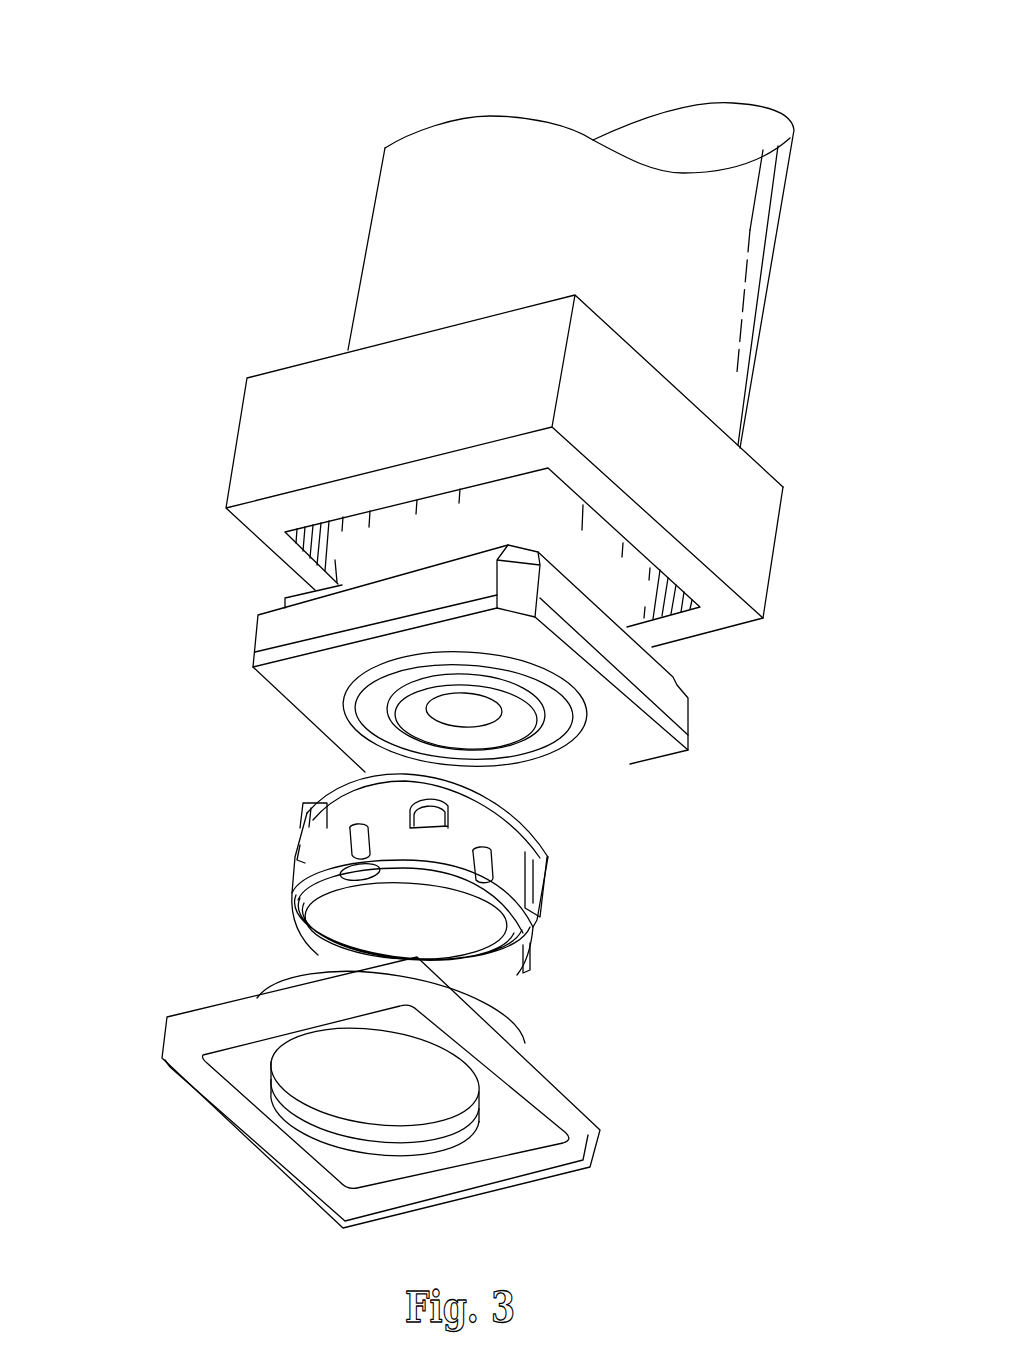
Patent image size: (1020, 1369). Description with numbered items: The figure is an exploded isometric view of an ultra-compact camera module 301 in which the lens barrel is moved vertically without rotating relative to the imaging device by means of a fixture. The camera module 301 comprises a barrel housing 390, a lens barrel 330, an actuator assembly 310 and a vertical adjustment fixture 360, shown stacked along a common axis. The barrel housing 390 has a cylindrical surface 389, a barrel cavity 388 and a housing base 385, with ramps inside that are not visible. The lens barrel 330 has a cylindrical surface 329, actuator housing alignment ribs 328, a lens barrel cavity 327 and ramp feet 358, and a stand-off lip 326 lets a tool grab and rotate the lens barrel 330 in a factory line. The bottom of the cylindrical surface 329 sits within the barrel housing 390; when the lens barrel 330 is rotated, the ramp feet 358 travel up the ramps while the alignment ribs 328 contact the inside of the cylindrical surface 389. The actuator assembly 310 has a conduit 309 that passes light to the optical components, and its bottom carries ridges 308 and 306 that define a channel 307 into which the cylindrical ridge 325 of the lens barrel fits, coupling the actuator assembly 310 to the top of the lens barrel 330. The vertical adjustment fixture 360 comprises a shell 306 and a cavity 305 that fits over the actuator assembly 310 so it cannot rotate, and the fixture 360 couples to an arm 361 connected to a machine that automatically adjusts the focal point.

The ultra-compact camera module 301 is at (135, 75).
The cavity 305 is at (489, 525).
The shell 306 is at (773, 537).
The channel 307 is at (562, 725).
The ridge 308 is at (590, 717).
The conduit 309 is at (465, 710).
The actuator assembly 310 is at (227, 618).
The cylindrical ridge 325 is at (337, 790).
The stand-off lip 326 is at (468, 840).
The lens barrel cavity 327 is at (394, 934).
The actuator housing alignment ribs 328 is at (327, 793).
The cylindrical surface 329 is at (297, 853).
The lens barrel 330 is at (237, 777).
The ramp feet 358 is at (293, 910).
The vertical adjustment fixture 360 is at (222, 408).
The arm 361 is at (398, 255).
The housing base 385 is at (197, 1010).
The barrel cavity 388 is at (357, 1089).
The cylindrical surface 389 is at (280, 980).
The barrel housing 390 is at (598, 1082).